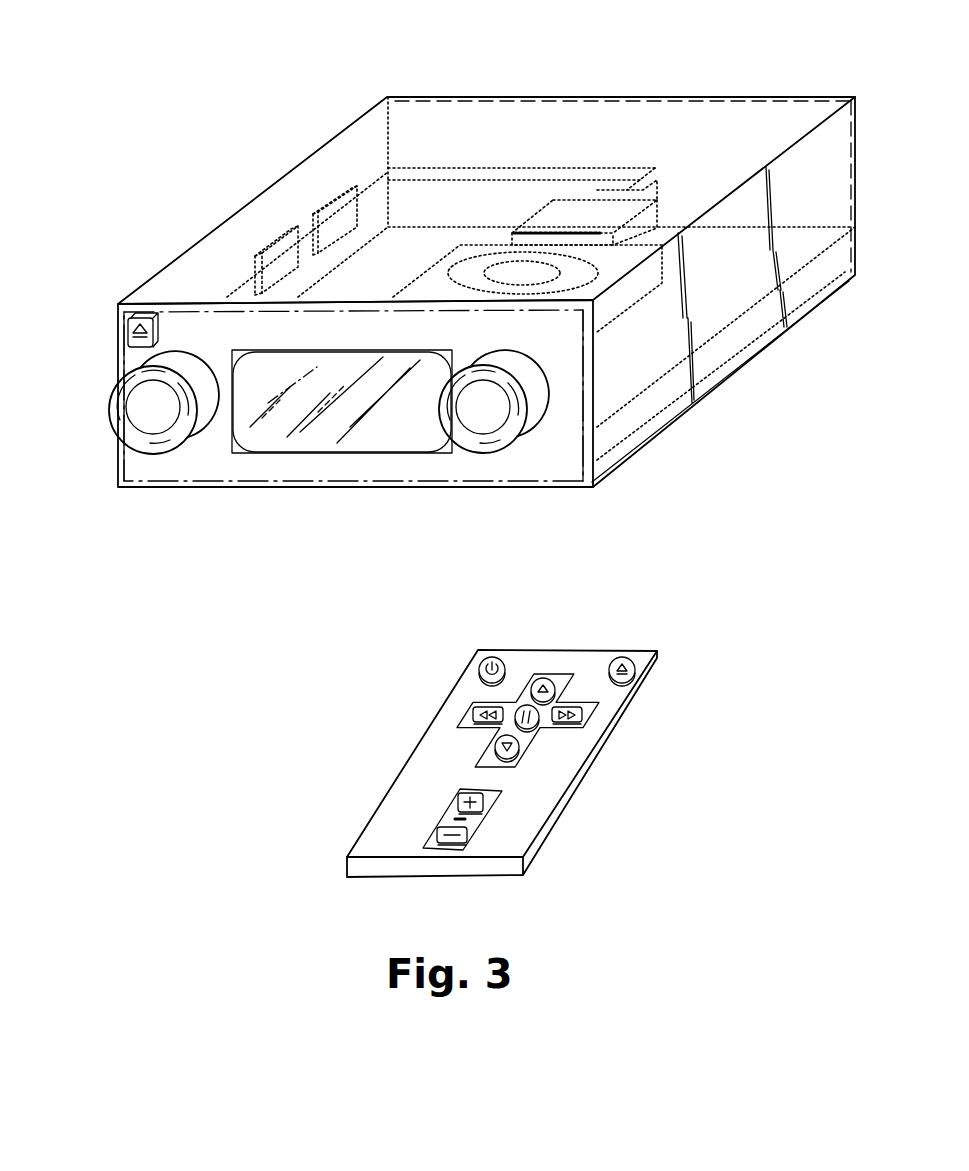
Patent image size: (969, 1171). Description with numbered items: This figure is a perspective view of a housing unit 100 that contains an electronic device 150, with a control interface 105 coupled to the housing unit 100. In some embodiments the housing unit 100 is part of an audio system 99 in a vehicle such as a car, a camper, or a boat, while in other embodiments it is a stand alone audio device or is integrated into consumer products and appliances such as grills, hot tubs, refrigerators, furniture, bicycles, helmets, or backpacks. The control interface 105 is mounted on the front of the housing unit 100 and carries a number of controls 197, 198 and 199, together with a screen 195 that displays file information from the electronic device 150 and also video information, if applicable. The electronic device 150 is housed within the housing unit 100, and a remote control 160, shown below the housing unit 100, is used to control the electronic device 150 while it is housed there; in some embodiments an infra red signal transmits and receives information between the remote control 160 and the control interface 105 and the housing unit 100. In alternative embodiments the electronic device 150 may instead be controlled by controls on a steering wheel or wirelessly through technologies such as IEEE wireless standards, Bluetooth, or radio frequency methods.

The audio system 99 is at (196, 62).
The housing unit 100 is at (447, 350).
The control interface 105 is at (335, 451).
The electronic device 150 is at (640, 305).
The remote control 160 is at (642, 800).
The screen 195 is at (460, 467).
The control 197 is at (128, 328).
The control 198 is at (112, 405).
The control 199 is at (541, 464).